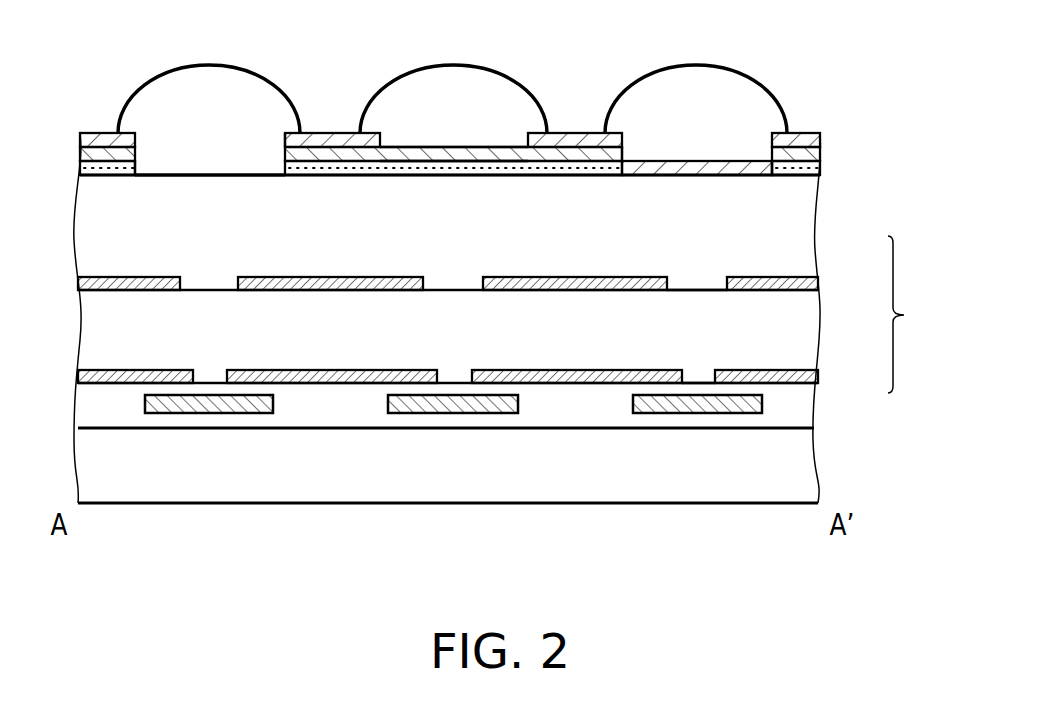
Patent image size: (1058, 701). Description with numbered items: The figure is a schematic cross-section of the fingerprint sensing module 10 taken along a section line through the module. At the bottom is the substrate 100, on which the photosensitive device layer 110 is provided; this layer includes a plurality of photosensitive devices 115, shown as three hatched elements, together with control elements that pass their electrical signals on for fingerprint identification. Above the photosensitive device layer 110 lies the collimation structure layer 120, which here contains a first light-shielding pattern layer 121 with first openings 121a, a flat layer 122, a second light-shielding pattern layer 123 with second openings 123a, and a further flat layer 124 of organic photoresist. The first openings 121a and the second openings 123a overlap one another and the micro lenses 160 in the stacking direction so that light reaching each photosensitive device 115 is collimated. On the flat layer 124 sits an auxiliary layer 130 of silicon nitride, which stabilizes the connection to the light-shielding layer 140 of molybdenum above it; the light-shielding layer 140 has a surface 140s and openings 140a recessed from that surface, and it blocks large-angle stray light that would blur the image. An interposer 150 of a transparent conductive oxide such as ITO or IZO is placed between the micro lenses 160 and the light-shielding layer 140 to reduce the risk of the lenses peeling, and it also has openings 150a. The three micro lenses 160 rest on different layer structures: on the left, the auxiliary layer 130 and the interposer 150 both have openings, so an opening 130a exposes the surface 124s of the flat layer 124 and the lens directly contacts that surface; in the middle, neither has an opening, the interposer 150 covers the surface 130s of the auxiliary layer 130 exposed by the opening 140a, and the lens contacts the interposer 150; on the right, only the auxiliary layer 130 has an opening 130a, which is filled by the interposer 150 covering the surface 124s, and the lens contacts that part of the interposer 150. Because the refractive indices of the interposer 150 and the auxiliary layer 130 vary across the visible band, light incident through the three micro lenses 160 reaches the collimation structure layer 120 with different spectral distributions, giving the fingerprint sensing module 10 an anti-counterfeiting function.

The fingerprint sensing module 10 is at (881, 581).
The substrate 100 is at (800, 473).
The photosensitive device layer 110 is at (800, 414).
The photosensitive device 115 is at (698, 413).
The collimation structure layer 120 is at (918, 314).
The first light-shielding pattern layer 121 is at (812, 381).
The first opening 121a is at (698, 377).
The flat layer 122 is at (805, 337).
The second light-shielding pattern layer 123 is at (812, 288).
The second opening 123a is at (697, 283).
The flat layer 124 is at (800, 250).
The surface of flat layer 124s is at (205, 175).
The auxiliary layer 130 is at (812, 181).
The opening of auxiliary layer 130a is at (137, 168).
The surface of auxiliary layer 130s is at (456, 163).
The light-shielding layer 140 is at (812, 158).
The opening of light-shielding layer 140a is at (623, 151).
The surface of light-shielding layer 140s is at (573, 148).
The interposer 150 is at (818, 133).
The opening of interposer 150a is at (276, 142).
The micro lens 160 is at (743, 76).